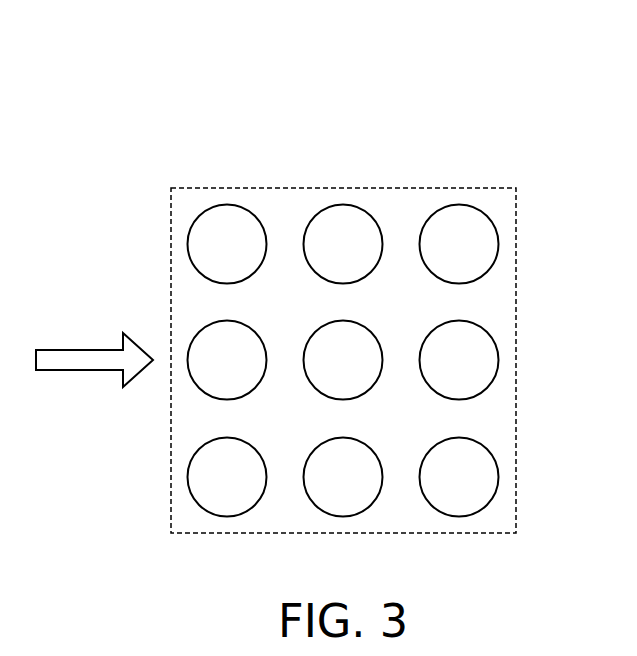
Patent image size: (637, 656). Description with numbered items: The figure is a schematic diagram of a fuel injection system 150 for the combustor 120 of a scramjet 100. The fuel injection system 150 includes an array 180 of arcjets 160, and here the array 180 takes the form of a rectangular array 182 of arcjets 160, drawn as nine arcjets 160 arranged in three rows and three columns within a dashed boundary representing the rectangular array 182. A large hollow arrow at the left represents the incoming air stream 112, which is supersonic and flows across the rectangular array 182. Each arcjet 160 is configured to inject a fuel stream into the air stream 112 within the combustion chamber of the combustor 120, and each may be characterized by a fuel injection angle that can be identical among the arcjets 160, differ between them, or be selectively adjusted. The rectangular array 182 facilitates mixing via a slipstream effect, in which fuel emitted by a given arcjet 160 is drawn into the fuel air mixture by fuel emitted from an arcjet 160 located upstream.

The scramjet 100 is at (160, 50).
The incoming air stream 112 is at (87, 349).
The combustor 120 is at (170, 86).
The fuel injection system 150 is at (180, 125).
The arcjet 160 is at (318, 508).
The array of arcjets 180 is at (188, 161).
The rectangular array of arcjets 182 is at (257, 183).